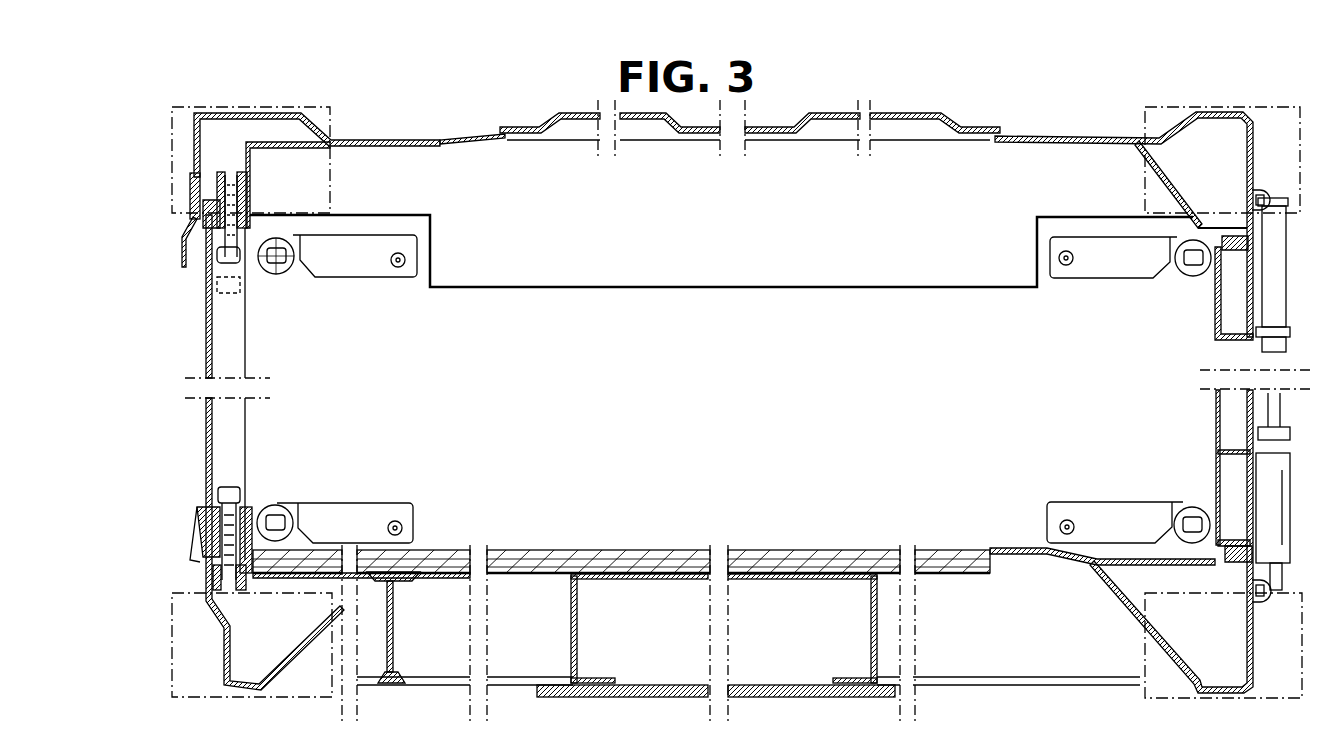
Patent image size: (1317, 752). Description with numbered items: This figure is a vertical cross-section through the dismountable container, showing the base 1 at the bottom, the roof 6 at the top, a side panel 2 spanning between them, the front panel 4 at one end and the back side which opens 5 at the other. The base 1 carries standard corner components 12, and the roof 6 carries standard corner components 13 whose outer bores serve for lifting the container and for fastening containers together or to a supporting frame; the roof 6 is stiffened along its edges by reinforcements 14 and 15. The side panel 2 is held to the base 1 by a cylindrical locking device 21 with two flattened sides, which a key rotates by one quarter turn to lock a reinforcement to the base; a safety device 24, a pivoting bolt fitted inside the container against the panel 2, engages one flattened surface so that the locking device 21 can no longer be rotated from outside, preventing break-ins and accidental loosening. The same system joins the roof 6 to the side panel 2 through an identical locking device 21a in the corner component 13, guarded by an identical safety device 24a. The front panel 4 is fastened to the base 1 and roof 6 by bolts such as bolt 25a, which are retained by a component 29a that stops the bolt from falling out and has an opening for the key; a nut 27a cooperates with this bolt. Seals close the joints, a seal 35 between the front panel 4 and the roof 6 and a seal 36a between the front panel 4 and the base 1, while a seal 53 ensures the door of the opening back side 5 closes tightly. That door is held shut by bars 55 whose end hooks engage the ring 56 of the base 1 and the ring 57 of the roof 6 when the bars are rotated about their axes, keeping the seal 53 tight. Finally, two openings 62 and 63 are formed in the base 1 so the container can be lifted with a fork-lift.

The base 1 is at (447, 683).
The side panel 2 is at (719, 387).
The front panel 4 is at (222, 352).
The back side which opens 5 is at (1238, 397).
The roof 6 is at (565, 113).
The corner component 12 is at (197, 675).
The corner component 13 is at (170, 103).
The reinforcement 14 is at (210, 135).
The reinforcement 15 is at (1210, 145).
The locking device 21 is at (277, 517).
The locking device 21a is at (277, 262).
The safety device 24 is at (350, 523).
The safety device 24a is at (370, 265).
The bolt 25a is at (207, 238).
The nut 27a is at (233, 170).
The component 29a is at (223, 298).
The seal 35 is at (188, 200).
The seal 36a is at (210, 547).
The seal 53 is at (1237, 245).
The bar 55 is at (1263, 485).
The ring 56 is at (1264, 603).
The ring 57 is at (1260, 193).
The opening 62 is at (622, 635).
The opening 63 is at (811, 635).